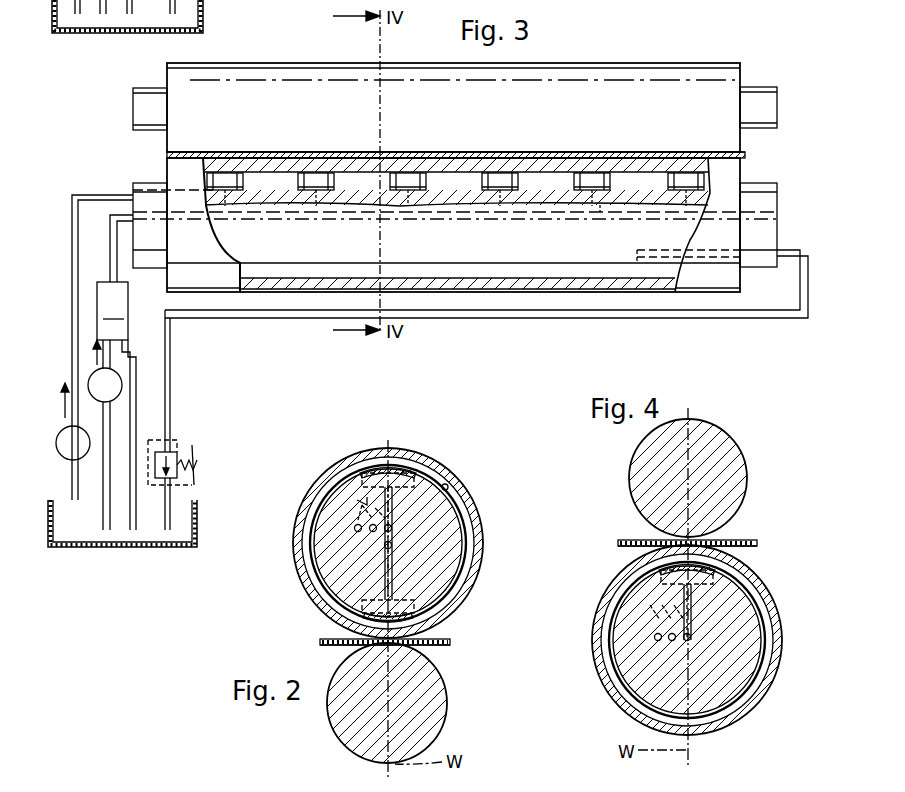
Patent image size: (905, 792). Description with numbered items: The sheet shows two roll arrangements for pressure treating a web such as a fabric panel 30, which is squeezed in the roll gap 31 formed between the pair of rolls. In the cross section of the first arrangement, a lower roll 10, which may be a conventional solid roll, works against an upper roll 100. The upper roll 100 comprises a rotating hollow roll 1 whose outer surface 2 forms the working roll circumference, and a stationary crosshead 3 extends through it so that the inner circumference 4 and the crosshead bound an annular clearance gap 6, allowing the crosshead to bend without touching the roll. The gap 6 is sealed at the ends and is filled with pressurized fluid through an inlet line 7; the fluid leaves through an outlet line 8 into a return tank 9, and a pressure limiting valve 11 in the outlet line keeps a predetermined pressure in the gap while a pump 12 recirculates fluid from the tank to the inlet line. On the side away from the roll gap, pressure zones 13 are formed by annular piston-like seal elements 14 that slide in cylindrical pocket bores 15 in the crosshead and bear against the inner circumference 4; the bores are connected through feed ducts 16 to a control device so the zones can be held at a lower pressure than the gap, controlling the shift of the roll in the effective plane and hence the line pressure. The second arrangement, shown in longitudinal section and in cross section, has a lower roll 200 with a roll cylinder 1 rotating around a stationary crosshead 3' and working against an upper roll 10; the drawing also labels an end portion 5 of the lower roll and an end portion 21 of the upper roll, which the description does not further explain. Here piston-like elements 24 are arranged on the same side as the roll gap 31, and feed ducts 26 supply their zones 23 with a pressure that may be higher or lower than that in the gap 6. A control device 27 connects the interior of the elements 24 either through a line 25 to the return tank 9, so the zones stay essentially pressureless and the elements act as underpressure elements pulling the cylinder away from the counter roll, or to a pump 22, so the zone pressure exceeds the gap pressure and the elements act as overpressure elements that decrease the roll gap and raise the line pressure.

In FIG. 3, the hollow roll 1 is at (250, 294).
In FIG. 2, the hollow roll 1 is at (298, 546).
In FIG. 4, the hollow roll 1 is at (598, 656).
In FIG. 2, the outer surface 2 is at (473, 530).
In FIG. 2, the crosshead 3 is at (407, 543).
In FIG. 3, the crosshead 3' is at (474, 200).
In FIG. 2, the crosshead 3' is at (388, 543).
In FIG. 4, the crosshead 3' is at (661, 640).
In FIG. 3, the inner circumference 4 is at (384, 168).
In FIG. 2, the inner circumference 4 is at (449, 486).
In FIG. 3, the journal of roll 5 is at (777, 228).
In FIG. 3, the clearance gap 6 is at (540, 175).
In FIG. 2, the clearance gap 6 is at (348, 462).
In FIG. 4, the clearance gap 6 is at (598, 636).
In FIG. 3, the inlet line 7 is at (96, 198).
In FIG. 3, the outlet line 8 is at (800, 318).
In FIG. 3, the return tank 9 is at (197, 522).
In FIG. 3, the lower roll 10 is at (665, 82).
In FIG. 2, the lower roll 10 is at (448, 696).
In FIG. 4, the lower roll 10 is at (744, 446).
In FIG. 3, the pressure limiting valve 11 is at (176, 455).
In FIG. 3, the pump 12 is at (68, 458).
In FIG. 2, the pressure zones 13 is at (414, 445).
In FIG. 2, the seal elements 14 is at (410, 465).
In FIG. 2, the pocket bores 15 is at (355, 482).
In FIG. 2, the feed ducts 16 is at (352, 512).
In FIG. 3, the journal of counter roll 21 is at (762, 96).
In FIG. 3, the pump 22 is at (116, 402).
In FIG. 3, the zones 23 is at (243, 148).
In FIG. 3, the piston-like elements 24 is at (296, 178).
In FIG. 4, the piston-like elements 24 is at (664, 566).
In FIG. 3, the line 25 is at (136, 368).
In FIG. 3, the feed ducts 26 is at (594, 206).
In FIG. 4, the feed ducts 26 is at (648, 606).
In FIG. 3, the control device 27 is at (113, 290).
In FIG. 3, the fabric panel 30 is at (368, 172).
In FIG. 2, the fabric panel 30 is at (445, 640).
In FIG. 4, the fabric panel 30 is at (748, 538).
In FIG. 3, the roll gap 31 is at (746, 158).
In FIG. 2, the roll gap 31 is at (340, 638).
In FIG. 4, the roll gap 31 is at (651, 540).
In FIG. 2, the upper roll 100 is at (440, 462).
In FIG. 3, the lower roll 200 is at (712, 292).
In FIG. 4, the lower roll 200 is at (780, 606).